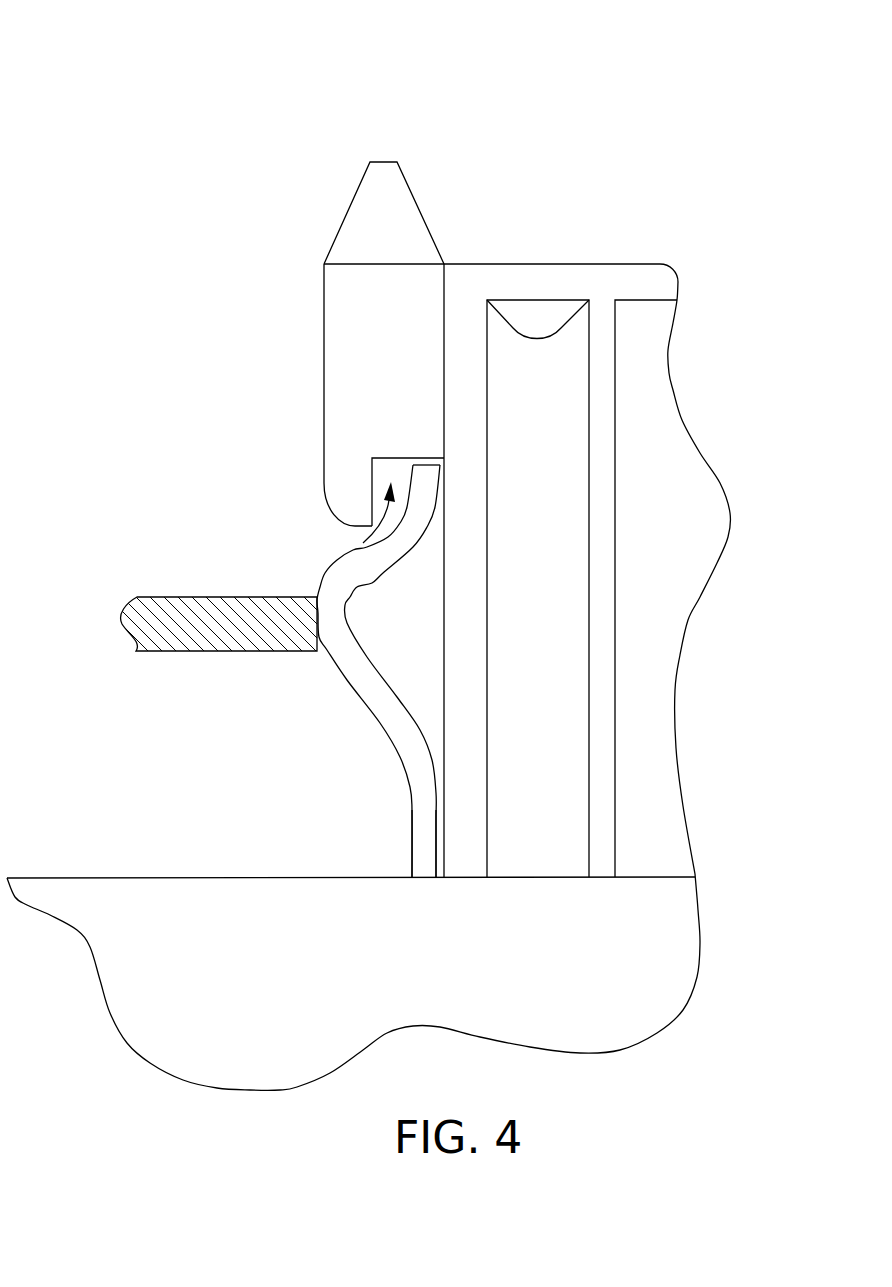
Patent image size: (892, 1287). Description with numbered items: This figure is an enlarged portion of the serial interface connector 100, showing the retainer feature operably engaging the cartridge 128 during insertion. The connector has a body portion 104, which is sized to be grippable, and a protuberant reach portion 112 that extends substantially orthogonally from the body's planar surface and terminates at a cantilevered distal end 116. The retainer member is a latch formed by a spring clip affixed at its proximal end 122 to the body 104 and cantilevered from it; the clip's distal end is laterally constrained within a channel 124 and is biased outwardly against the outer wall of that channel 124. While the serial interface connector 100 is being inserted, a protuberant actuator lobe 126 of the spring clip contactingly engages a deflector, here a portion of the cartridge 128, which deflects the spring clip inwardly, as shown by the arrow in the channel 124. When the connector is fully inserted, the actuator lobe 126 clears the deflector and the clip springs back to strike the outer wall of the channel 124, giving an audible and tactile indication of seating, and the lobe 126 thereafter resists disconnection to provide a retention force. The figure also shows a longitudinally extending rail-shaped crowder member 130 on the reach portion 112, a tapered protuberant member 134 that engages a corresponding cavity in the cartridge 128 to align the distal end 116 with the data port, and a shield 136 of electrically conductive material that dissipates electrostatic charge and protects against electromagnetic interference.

The serial interface connector 100 is at (206, 145).
The body portion 104 is at (123, 938).
The reach portion 112 is at (475, 307).
The distal end 116 is at (620, 262).
The proximal end 122 is at (411, 875).
The channel 124 is at (360, 543).
The protuberant actuator lobe 126 is at (317, 598).
The cartridge 128 is at (155, 652).
The crowder member 130 is at (526, 403).
The protuberant member 134 is at (385, 160).
The shield 136 is at (668, 527).